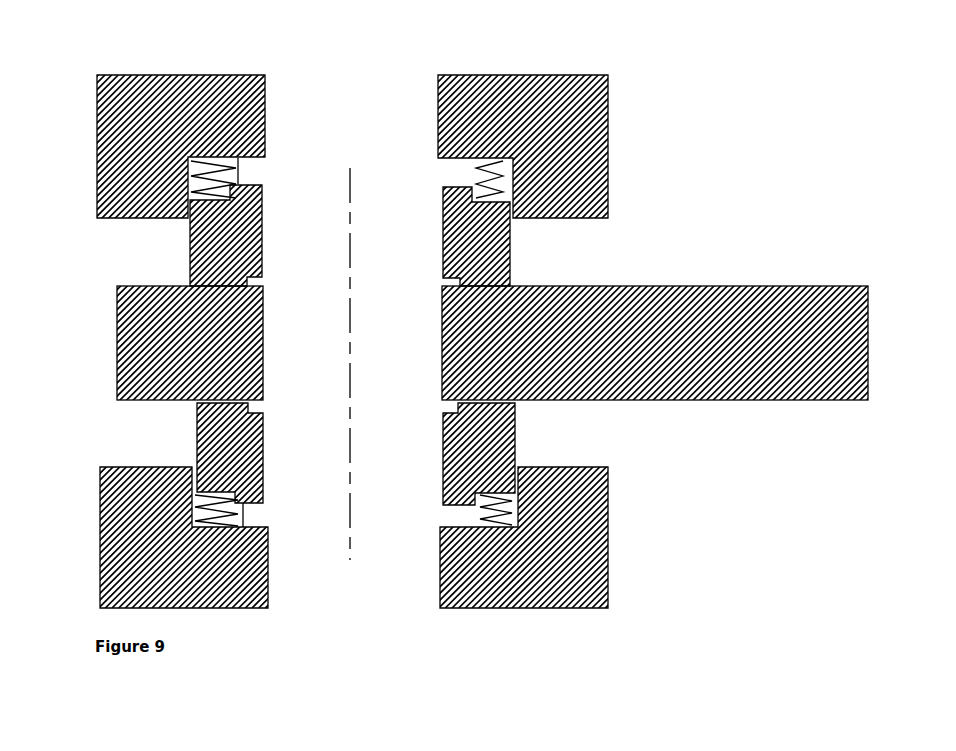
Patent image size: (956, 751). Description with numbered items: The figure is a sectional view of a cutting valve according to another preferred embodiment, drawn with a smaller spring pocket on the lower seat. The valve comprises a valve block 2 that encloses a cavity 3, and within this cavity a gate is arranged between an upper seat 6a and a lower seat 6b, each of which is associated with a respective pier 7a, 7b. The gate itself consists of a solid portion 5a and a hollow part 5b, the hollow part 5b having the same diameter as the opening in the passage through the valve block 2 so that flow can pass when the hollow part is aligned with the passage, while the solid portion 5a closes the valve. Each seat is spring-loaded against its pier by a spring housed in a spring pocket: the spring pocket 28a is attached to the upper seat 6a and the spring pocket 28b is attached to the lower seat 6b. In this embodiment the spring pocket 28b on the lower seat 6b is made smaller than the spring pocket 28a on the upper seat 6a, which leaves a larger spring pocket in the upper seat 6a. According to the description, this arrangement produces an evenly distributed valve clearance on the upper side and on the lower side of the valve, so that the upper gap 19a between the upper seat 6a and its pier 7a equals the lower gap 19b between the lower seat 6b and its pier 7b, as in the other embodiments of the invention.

The valve block 2 is at (567, 95).
The cavity 3 is at (585, 245).
The solid portion 5a is at (135, 355).
The hollow part 5b is at (290, 355).
The upper seat 6a is at (205, 258).
The lower seat 6b is at (200, 439).
The pier 7a is at (195, 165).
The pier 7b is at (258, 522).
The upper gap 19a is at (238, 180).
The lower gap 19b is at (256, 523).
The spring pocket 28a is at (232, 187).
The spring pocket 28b is at (232, 511).